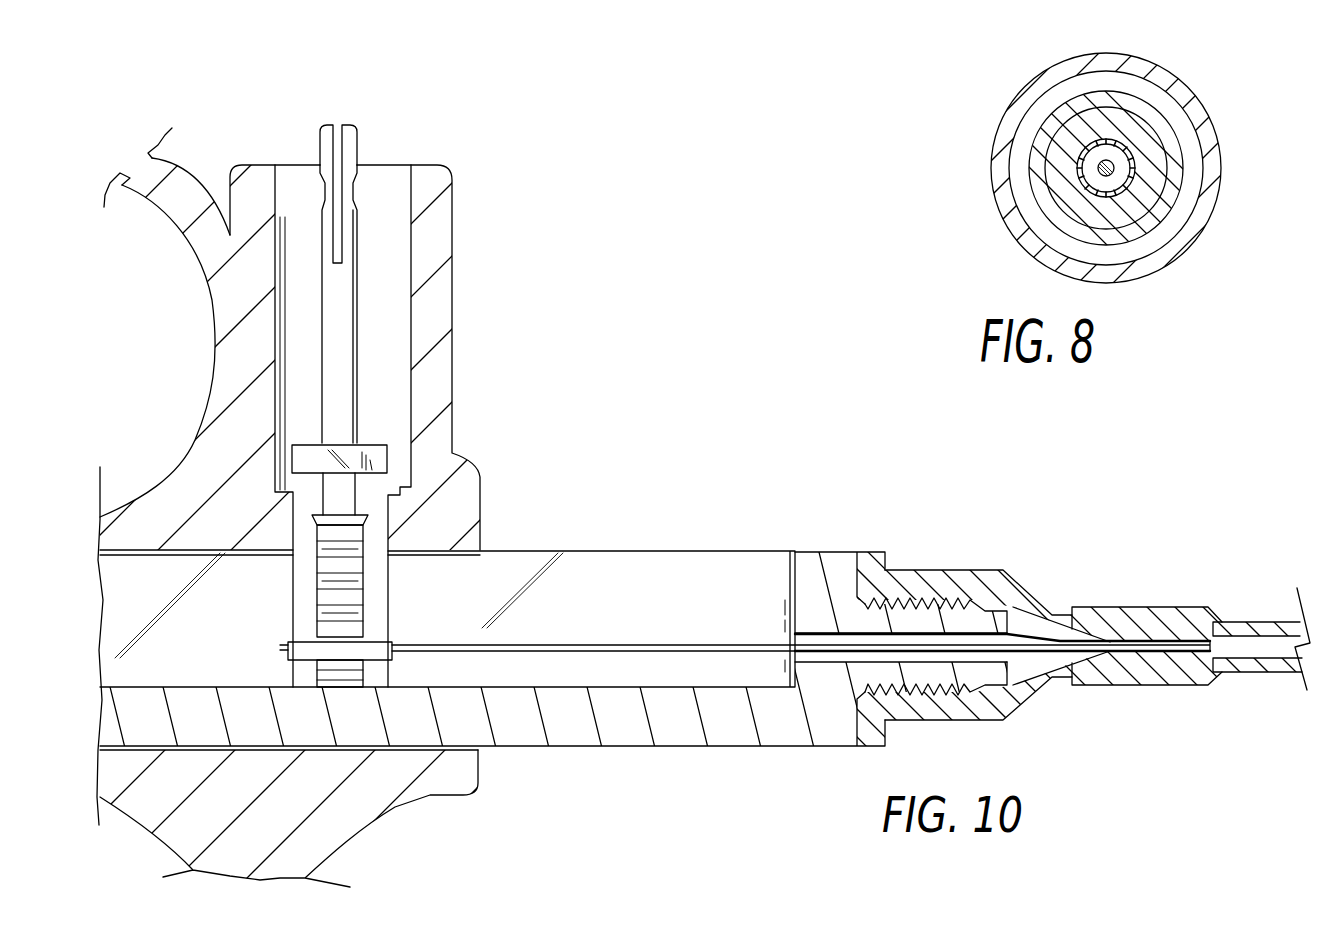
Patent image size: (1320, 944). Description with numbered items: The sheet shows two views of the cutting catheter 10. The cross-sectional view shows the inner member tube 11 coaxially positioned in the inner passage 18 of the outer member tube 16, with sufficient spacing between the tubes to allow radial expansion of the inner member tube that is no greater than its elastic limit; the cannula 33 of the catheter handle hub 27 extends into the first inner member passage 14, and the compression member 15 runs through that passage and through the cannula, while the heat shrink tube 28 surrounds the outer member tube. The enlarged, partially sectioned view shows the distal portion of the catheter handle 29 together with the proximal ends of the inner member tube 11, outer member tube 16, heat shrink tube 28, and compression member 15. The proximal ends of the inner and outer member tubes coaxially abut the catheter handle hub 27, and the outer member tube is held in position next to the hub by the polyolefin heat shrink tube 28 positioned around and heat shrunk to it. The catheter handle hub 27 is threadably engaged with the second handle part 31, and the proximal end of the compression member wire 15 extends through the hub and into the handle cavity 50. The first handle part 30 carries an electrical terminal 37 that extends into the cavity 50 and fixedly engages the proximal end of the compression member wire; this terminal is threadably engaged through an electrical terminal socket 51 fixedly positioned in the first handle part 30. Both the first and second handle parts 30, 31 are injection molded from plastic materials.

In FIG. 10, the cutting catheter 10 is at (538, 165).
In FIG. 8, the cutting catheter 10 is at (1203, 58).
In FIG. 8, the inner member tube 11 is at (1160, 175).
In FIG. 8, the first inner member passage 14 is at (1095, 182).
In FIG. 10, the compression member 15 is at (552, 650).
In FIG. 8, the compression member 15 is at (1102, 164).
In FIG. 10, the outer member tube 16 is at (1248, 638).
In FIG. 8, the outer member tube 16 is at (1190, 155).
In FIG. 8, the inner passage 18 is at (1167, 190).
In FIG. 10, the catheter handle hub 27 is at (985, 570).
In FIG. 10, the heat shrink tube 28 is at (1098, 607).
In FIG. 8, the heat shrink tube 28 is at (1197, 112).
In FIG. 10, the catheter handle 29 is at (562, 267).
In FIG. 10, the first handle part 30 is at (472, 528).
In FIG. 10, the second handle part 31 is at (635, 750).
In FIG. 8, the cannula 33 is at (1150, 195).
In FIG. 10, the electrical terminal 37 is at (350, 128).
In FIG. 10, the handle cavity 50 is at (643, 590).
In FIG. 10, the electrical terminal socket 51 is at (380, 543).